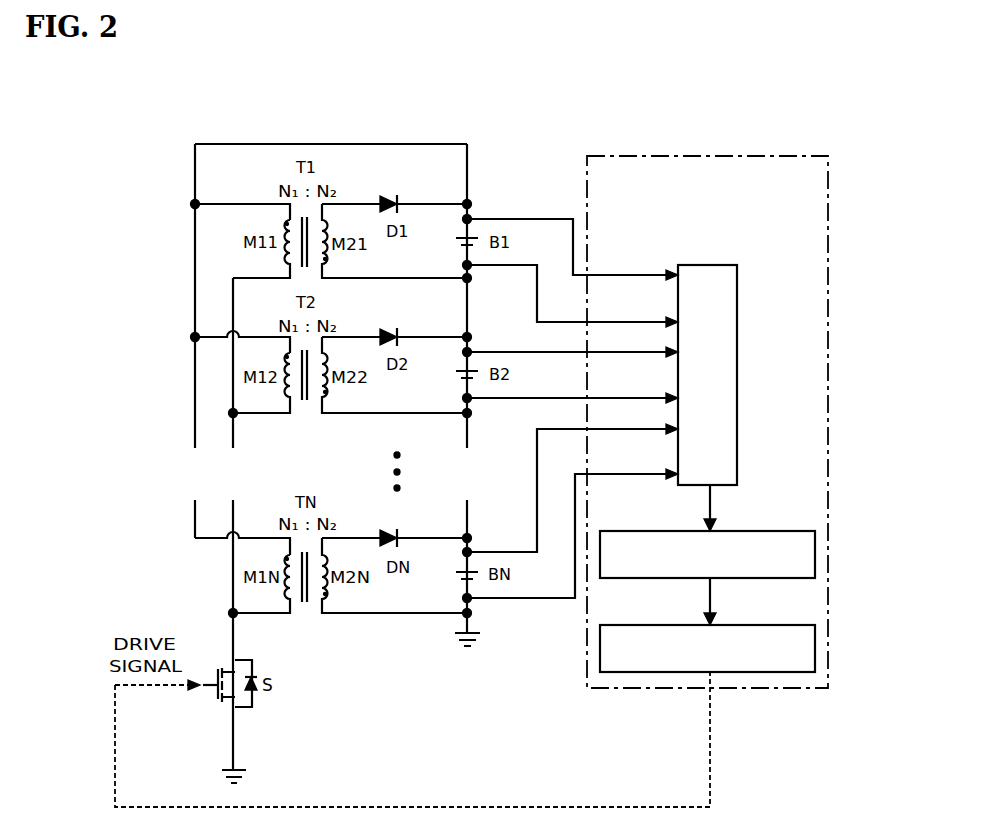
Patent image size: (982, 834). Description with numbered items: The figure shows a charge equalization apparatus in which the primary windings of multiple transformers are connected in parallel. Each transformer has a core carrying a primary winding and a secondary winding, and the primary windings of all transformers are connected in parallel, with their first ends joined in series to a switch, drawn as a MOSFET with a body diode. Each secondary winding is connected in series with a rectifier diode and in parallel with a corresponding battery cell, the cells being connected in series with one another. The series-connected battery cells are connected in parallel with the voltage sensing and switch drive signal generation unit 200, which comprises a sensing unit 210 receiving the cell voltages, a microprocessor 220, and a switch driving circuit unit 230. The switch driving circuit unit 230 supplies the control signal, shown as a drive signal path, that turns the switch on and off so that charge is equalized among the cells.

The voltage sensing and switch drive signal generation unit 200 is at (710, 156).
The sensing unit 210 is at (737, 380).
The microprocessor 220 is at (815, 553).
The switch driving circuit unit 230 is at (815, 647).